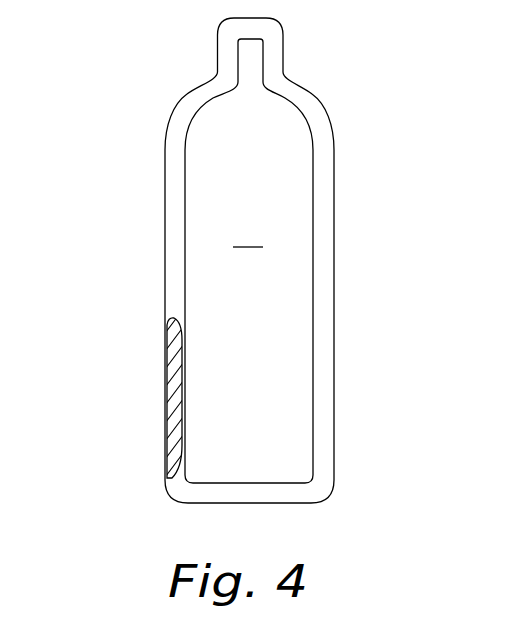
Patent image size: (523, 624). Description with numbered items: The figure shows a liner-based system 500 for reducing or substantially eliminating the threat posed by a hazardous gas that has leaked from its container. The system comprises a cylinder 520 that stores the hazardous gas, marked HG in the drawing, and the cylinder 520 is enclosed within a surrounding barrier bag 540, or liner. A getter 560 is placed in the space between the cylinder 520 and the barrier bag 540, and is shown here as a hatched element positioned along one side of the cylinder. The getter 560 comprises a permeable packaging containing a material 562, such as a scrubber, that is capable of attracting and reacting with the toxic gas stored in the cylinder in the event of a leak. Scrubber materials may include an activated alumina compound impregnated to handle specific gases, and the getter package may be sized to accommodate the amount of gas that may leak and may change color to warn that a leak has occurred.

The liner-based system 500 is at (372, 93).
The cylinder 520 is at (313, 177).
The barrier bag 540 is at (334, 229).
The getter 560 is at (140, 363).
The material 562 is at (168, 395).